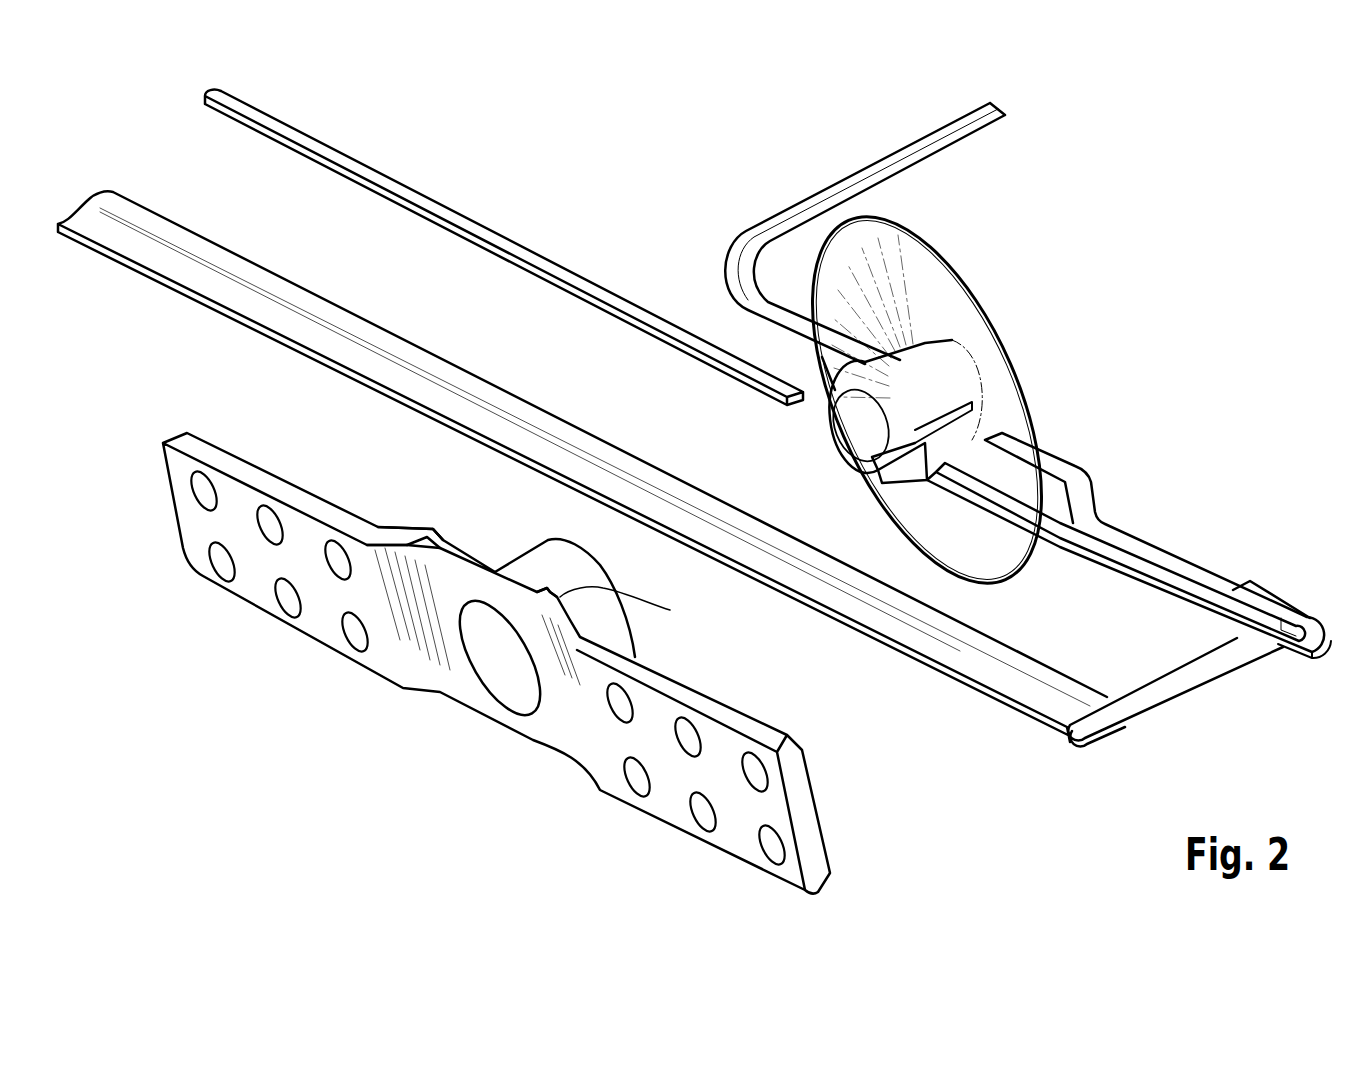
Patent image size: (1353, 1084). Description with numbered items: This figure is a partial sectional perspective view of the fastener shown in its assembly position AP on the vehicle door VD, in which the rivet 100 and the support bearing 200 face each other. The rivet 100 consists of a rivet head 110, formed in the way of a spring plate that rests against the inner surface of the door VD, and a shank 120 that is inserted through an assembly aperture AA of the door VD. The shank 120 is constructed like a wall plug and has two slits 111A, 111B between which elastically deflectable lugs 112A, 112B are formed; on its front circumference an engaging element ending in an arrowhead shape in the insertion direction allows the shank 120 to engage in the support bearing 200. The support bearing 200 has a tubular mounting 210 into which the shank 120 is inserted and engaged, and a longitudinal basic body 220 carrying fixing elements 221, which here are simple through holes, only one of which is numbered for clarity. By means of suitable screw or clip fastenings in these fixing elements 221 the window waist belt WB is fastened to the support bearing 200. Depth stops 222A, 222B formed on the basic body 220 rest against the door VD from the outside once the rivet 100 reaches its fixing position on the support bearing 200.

The rivet 100 is at (1028, 380).
The rivet head 110 is at (920, 287).
The slit 111A is at (830, 432).
The slit 111B is at (977, 420).
The elastically deflectable lug 112A is at (933, 368).
The elastically deflectable lug 112B is at (860, 483).
The shank 120 is at (808, 430).
The support bearing 200 is at (480, 663).
The tubular mounting 210 is at (560, 562).
The longitudinal basic body 220 is at (463, 683).
The fixing elements 221 is at (702, 818).
The depth stop 222A is at (425, 530).
The depth stop 222B is at (620, 590).
The assembly aperture AA is at (805, 369).
The assembly position AP is at (835, 680).
The door VD is at (1172, 570).
The winding bar WB is at (992, 672).